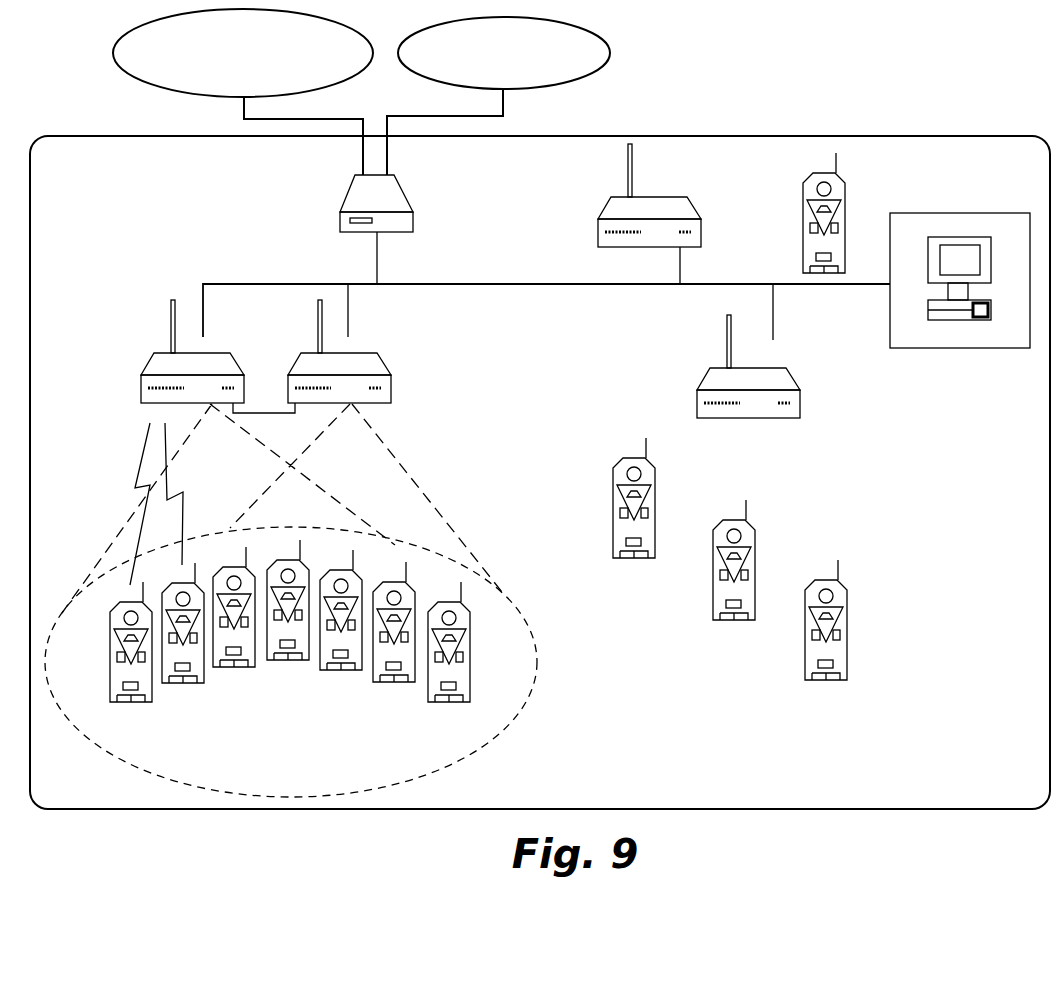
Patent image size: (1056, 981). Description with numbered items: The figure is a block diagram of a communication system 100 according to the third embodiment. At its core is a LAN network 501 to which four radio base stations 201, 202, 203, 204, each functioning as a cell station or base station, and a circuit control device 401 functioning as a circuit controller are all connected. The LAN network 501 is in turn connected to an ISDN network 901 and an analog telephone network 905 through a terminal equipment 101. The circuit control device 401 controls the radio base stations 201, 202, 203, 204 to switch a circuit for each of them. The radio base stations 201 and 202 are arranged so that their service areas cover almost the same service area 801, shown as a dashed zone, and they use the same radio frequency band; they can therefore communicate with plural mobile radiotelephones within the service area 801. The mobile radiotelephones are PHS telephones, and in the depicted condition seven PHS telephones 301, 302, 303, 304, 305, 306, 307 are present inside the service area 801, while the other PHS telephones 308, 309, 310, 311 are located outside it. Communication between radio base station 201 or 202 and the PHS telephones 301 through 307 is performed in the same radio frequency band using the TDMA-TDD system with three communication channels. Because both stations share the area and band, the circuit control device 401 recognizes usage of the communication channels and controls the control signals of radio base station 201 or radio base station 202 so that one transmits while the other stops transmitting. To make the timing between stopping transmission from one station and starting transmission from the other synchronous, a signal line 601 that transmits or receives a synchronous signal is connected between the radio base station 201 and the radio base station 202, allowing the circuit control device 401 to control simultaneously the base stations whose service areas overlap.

The analog telephone network 905 is at (113, 53).
The ISDN network 901 is at (610, 50).
The communication system 100 is at (882, 135).
The terminal equipment 101 is at (412, 200).
The radio base station 201 is at (212, 353).
The radio base station 202 is at (365, 353).
The radio base station 203 is at (677, 197).
The radio base station 204 is at (800, 390).
The mobile radiotelephone 301 is at (133, 703).
The mobile radiotelephone 302 is at (185, 683).
The mobile radiotelephone 303 is at (236, 667).
The mobile radiotelephone 304 is at (290, 660).
The mobile radiotelephone 305 is at (343, 670).
The mobile radiotelephone 306 is at (396, 682).
The mobile radiotelephone 307 is at (451, 702).
The mobile radiotelephone 308 is at (636, 558).
The mobile radiotelephone 309 is at (738, 620).
The mobile radiotelephone 310 is at (828, 680).
The mobile radiotelephone 311 is at (802, 232).
The circuit control device 401 is at (945, 213).
The LAN network 501 is at (573, 285).
The signal line 601 is at (268, 413).
The service area 801 is at (510, 730).